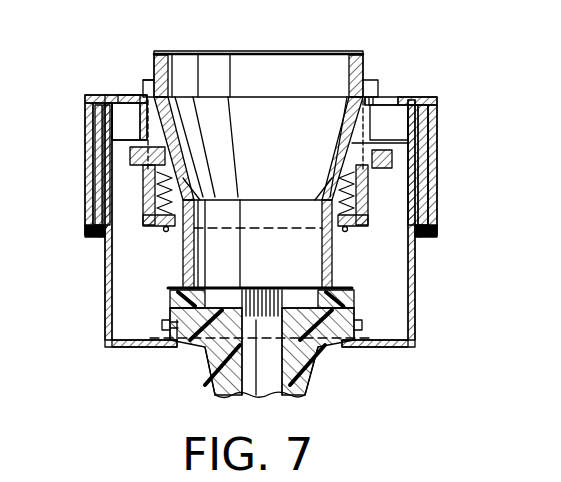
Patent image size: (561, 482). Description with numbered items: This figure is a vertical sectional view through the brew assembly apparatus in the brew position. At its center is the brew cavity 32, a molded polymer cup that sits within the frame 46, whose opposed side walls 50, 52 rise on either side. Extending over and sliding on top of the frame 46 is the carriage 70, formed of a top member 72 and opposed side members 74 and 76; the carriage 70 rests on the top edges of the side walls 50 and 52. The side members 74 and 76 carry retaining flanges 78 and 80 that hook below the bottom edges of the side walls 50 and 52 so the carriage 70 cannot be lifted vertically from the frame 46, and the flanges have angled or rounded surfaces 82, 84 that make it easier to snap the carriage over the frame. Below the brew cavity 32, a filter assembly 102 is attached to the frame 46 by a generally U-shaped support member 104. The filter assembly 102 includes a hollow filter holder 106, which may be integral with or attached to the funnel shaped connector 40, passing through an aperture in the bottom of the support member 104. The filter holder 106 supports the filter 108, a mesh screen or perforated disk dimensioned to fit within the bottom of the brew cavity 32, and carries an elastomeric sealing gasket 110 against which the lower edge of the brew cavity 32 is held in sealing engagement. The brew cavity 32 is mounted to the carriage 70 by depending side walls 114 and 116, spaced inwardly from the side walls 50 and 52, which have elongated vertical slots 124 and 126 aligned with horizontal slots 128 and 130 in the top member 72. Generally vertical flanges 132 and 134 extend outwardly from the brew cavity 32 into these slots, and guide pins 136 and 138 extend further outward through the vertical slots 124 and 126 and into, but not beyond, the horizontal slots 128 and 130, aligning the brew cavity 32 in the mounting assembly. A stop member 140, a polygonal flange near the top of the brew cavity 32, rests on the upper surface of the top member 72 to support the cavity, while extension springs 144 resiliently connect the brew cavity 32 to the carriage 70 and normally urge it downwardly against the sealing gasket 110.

The brew cavity 32 is at (275, 149).
The funnel shaped connector 40 is at (208, 380).
The frame 46 is at (88, 108).
The side wall 50 is at (420, 190).
The side wall 52 is at (104, 212).
The carriage 70 is at (438, 88).
The top member 72 is at (405, 97).
The side member 74 is at (419, 140).
The side member 76 is at (96, 178).
The flange 78 is at (438, 230).
The flange 80 is at (86, 232).
The angled or rounded surface 82 is at (422, 238).
The angled or rounded surface 84 is at (100, 238).
The filter assembly 102 is at (170, 323).
The support member 104 is at (412, 320).
The filter holder 106 is at (328, 340).
The filter 108 is at (228, 290).
The sealing gasket 110 is at (335, 292).
The side wall 114 is at (360, 190).
The side wall 116 is at (145, 222).
The vertical slot 124 is at (385, 135).
The vertical slot 126 is at (140, 135).
The horizontal slot 128 is at (386, 97).
The horizontal slot 130 is at (132, 98).
The vertical flange 132 is at (408, 143).
The vertical flange 134 is at (130, 158).
The guide pin 136 is at (392, 160).
The guide pin 138 is at (155, 182).
The stop member 140 is at (147, 80).
The extension springs 144 is at (192, 188).